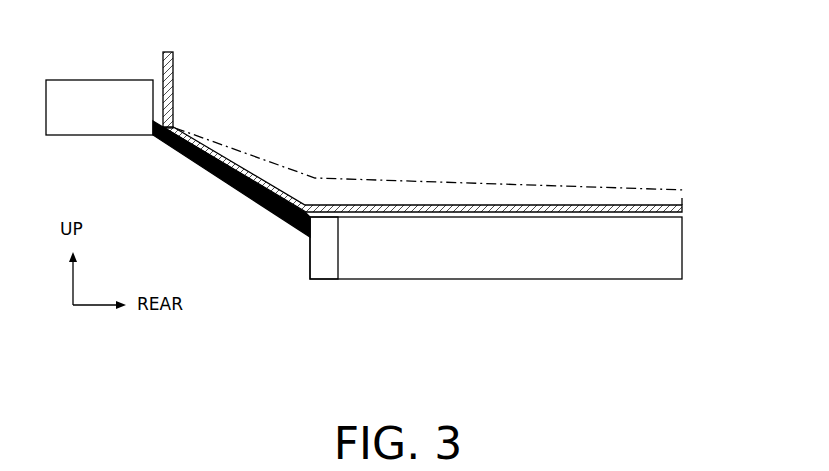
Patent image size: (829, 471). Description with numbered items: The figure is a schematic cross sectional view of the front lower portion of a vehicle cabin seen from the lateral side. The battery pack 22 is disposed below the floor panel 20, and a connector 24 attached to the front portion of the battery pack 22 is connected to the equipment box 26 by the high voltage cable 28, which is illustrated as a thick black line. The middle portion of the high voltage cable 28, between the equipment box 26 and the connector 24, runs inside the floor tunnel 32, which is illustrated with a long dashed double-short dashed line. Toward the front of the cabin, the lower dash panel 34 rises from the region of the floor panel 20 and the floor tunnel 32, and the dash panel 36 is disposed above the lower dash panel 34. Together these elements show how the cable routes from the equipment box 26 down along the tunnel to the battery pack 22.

The floor panel 20 is at (628, 200).
The battery pack 22 is at (500, 272).
The connector 24 is at (312, 280).
The equipment box 26 is at (87, 92).
The high voltage cable 28 is at (220, 175).
The floor tunnel 32 is at (507, 185).
The lower dash panel 34 is at (256, 175).
The dash panel 36 is at (187, 78).